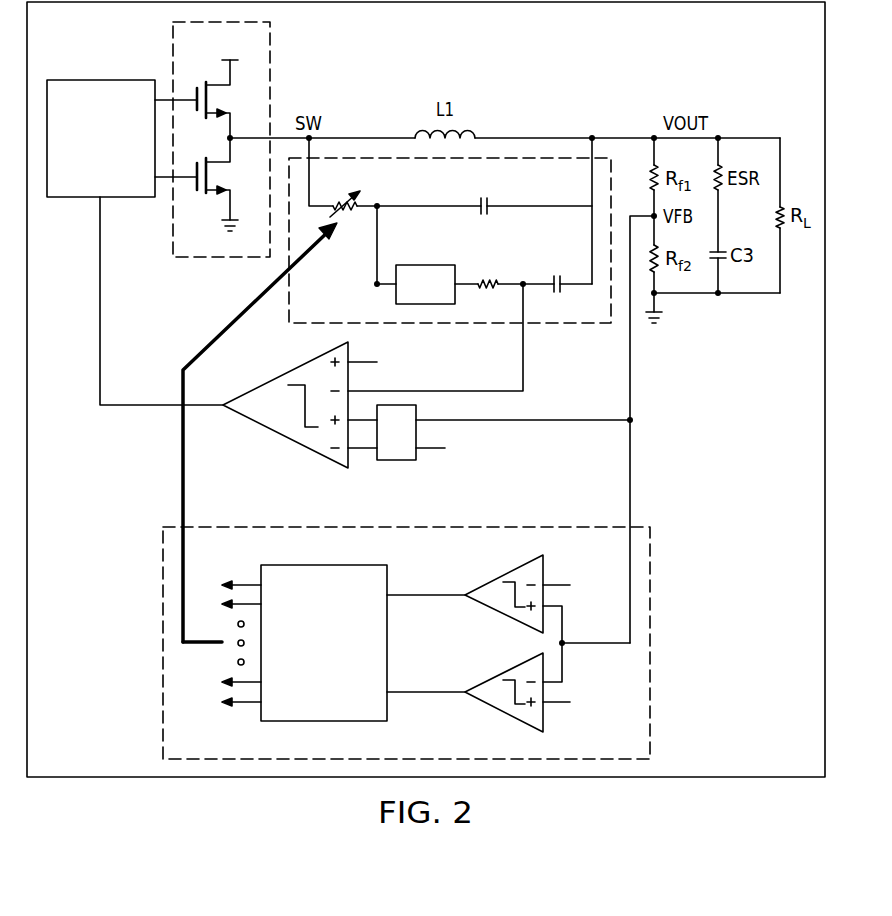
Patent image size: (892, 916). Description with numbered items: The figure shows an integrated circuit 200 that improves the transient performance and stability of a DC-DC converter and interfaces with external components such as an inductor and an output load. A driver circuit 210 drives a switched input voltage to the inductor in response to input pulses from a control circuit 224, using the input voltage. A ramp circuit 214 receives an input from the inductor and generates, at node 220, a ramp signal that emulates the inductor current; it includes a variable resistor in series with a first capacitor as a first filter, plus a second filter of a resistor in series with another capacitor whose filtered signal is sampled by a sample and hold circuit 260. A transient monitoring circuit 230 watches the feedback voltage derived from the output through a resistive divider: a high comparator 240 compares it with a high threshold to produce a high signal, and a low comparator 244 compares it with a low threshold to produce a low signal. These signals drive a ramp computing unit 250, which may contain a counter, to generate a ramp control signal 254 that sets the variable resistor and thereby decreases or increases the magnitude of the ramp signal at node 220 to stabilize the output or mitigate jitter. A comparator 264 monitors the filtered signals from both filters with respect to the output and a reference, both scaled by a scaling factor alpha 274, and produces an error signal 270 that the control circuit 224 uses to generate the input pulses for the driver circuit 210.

The integrated circuit 200 is at (462, 49).
The driver circuit 210 is at (273, 65).
The ramp circuit 214 is at (450, 256).
The node 220 is at (373, 212).
The control circuit 224 is at (88, 80).
The transient monitoring circuit 230 is at (656, 666).
The high comparator 240 is at (500, 577).
The low comparator 244 is at (500, 710).
The ramp computing unit 250 is at (342, 692).
The ramp control signal 254 is at (181, 477).
The sample and hold circuit 260 is at (426, 264).
The comparator 264 is at (285, 437).
The error signal 270 is at (143, 407).
The scaling factor alpha 274 is at (400, 461).